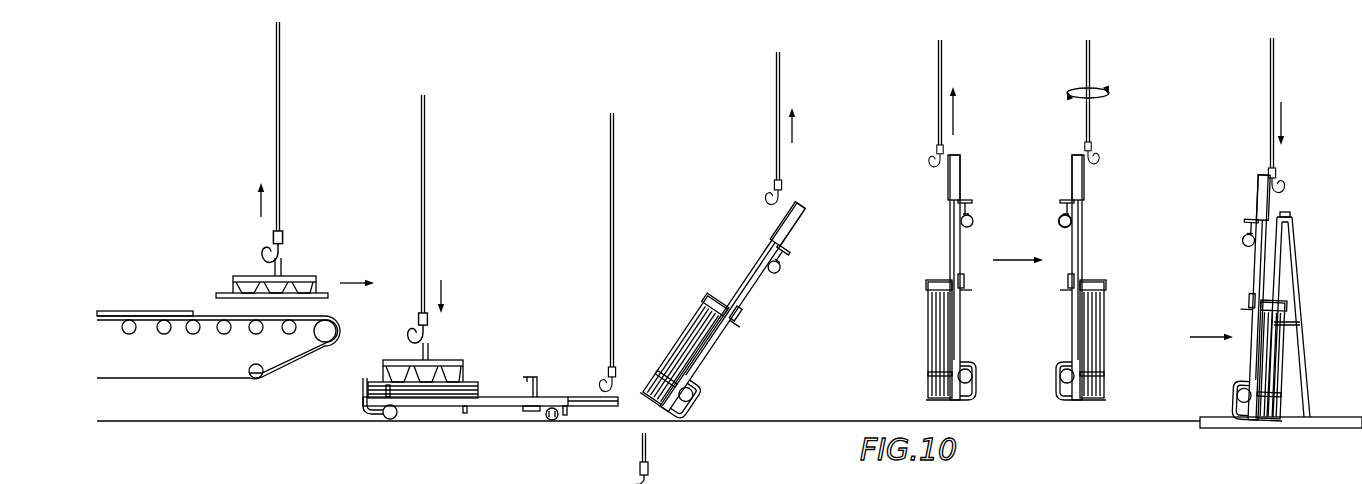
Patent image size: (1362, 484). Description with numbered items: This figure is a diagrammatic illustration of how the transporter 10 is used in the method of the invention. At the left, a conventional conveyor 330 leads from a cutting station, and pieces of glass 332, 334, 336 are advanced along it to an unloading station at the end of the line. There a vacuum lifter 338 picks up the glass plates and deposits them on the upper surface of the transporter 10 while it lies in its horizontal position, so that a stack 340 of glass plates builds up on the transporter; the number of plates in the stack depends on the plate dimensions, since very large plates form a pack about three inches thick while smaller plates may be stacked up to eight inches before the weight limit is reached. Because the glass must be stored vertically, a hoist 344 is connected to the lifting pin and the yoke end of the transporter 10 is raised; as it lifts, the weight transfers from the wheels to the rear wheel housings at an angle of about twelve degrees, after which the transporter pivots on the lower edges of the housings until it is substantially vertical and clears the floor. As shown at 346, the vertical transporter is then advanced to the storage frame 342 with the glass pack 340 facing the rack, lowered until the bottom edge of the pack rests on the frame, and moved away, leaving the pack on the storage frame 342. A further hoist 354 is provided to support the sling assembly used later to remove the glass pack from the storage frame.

The transporter 10 is at (561, 380).
The conveyor 330 is at (186, 380).
The piece of glass 332 is at (481, 396).
The piece of glass 334 is at (328, 299).
The piece of glass 336 is at (181, 311).
The vacuum lifter 338 is at (274, 119).
The stack of glass plates 340 is at (684, 336).
The storage frame 342 is at (1303, 246).
The hoist 344 is at (614, 122).
The advancing step of transporter 346 is at (1106, 224).
The hoist 354 is at (640, 452).